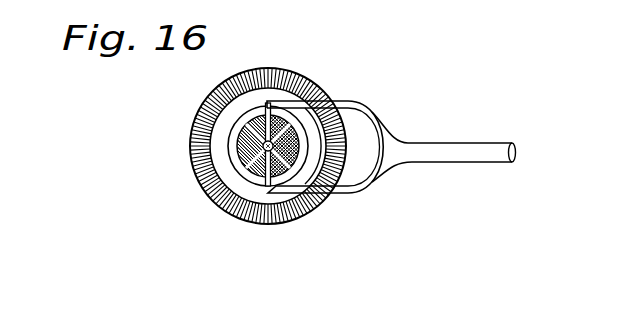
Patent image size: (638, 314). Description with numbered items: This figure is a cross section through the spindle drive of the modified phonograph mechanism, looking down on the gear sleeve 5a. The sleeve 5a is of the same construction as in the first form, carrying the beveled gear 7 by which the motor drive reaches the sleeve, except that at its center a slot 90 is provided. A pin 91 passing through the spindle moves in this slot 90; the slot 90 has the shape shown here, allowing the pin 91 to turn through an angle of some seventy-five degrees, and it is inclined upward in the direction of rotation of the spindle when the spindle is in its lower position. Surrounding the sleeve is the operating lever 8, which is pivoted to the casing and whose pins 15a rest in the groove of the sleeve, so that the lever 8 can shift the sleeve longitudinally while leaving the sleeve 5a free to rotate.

The beveled gear 7 is at (261, 67).
The operating lever 8 is at (405, 143).
The pin 91 is at (265, 120).
The gear sleeve 5a is at (236, 150).
The slot 90 is at (253, 174).
The pins 15a is at (263, 194).